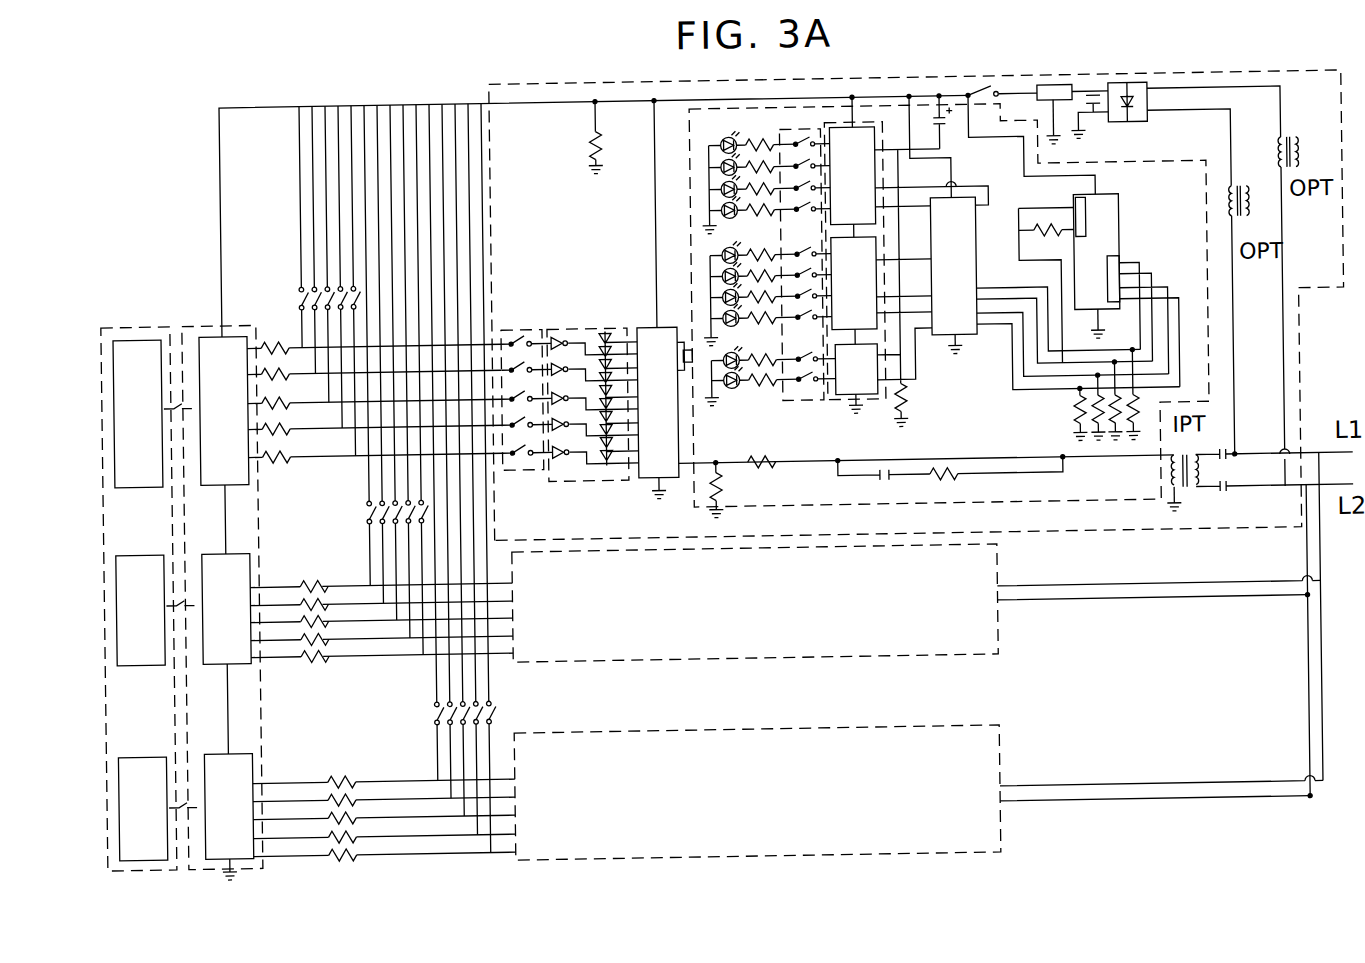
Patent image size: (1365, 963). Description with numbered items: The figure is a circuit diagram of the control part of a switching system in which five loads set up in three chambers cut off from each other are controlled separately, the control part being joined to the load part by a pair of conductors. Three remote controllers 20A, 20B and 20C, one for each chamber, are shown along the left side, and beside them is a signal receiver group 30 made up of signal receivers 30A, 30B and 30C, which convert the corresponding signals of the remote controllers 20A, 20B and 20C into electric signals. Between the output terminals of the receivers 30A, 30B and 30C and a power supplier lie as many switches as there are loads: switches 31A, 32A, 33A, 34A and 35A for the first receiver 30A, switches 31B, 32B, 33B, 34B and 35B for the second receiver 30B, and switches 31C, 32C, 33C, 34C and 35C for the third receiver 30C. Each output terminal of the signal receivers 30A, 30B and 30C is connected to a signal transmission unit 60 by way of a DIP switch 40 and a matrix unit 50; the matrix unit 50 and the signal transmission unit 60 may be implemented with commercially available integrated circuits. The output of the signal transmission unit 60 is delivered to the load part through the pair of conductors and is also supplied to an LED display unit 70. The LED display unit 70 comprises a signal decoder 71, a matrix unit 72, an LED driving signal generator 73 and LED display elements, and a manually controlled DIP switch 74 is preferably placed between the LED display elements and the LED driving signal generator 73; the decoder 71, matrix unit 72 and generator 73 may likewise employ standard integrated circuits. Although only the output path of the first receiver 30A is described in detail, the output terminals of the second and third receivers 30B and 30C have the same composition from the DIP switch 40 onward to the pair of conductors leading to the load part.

The remote controller 20A is at (138, 414).
The remote controller 20B is at (140, 610).
The remote controller 20C is at (142, 809).
The signal receiver 30 is at (207, 326).
The signal receiver 30A is at (224, 411).
The signal receiver 30B is at (226, 609).
The signal receiver 30C is at (228, 807).
The switch 31A is at (299, 289).
The switch 32A is at (351, 289).
The switch 33A is at (338, 289).
The switch 34A is at (325, 289).
The switch 35A is at (340, 311).
The switch 31B is at (364, 505).
The switch 32B is at (377, 505).
The switch 33B is at (390, 505).
The switch 34B is at (416, 504).
The switch 35B is at (403, 504).
The switch 31C is at (429, 706).
The switch 32C is at (442, 706).
The switch 33C is at (455, 706).
The switch 34C is at (468, 706).
The switch 35C is at (481, 706).
The DIP switch 40 is at (527, 335).
The matrix unit 50 is at (575, 335).
The signal transmission unit 60 is at (652, 335).
The LED display unit 70 is at (1026, 517).
The signal decoder 71 is at (1119, 266).
The matrix unit 72 is at (977, 275).
The LED driving signal generator 73 is at (884, 412).
The DIP switch 74 is at (808, 410).